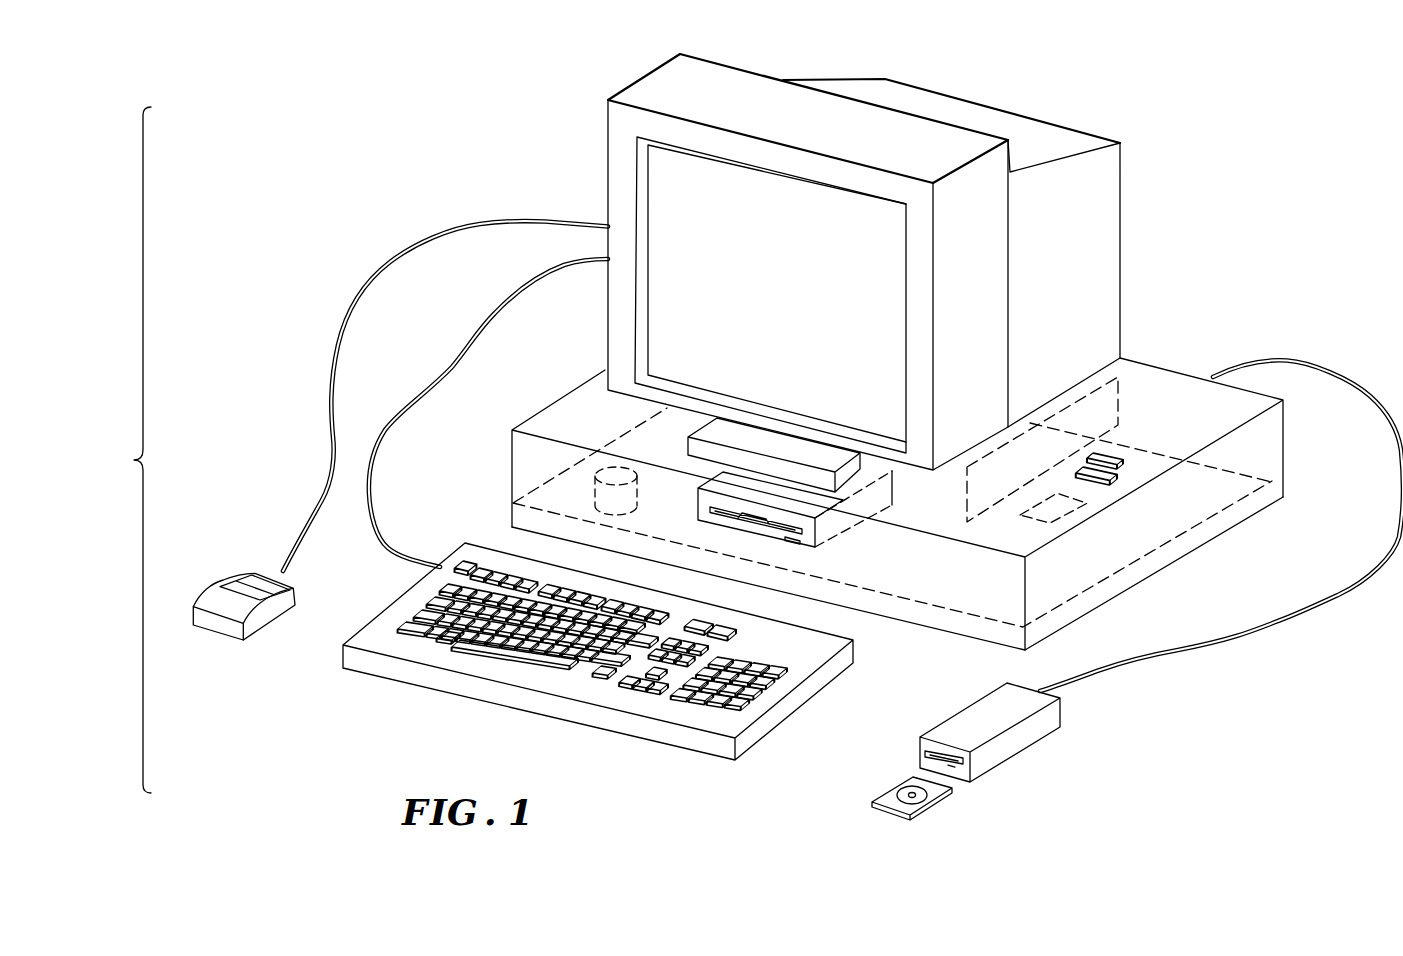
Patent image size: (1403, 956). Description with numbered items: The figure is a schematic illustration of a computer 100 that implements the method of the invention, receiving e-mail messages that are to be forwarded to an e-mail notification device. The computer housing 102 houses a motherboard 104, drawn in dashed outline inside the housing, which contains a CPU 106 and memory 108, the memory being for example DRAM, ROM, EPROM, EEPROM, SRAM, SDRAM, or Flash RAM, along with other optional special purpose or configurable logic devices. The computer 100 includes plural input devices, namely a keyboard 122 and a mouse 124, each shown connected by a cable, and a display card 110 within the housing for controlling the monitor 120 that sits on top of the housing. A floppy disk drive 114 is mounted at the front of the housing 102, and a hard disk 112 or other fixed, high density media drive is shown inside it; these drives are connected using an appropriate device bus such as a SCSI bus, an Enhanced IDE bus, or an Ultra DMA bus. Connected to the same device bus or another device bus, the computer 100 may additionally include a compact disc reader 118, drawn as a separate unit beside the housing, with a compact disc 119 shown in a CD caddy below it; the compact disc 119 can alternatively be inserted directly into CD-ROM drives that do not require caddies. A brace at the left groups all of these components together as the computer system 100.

The computer 100 is at (122, 450).
The computer housing 102 is at (1162, 373).
The motherboard 104 is at (1226, 506).
The CPU 106 is at (1047, 512).
The memory 108 is at (1120, 478).
The display card 110 is at (1097, 387).
The hard disk 112 is at (597, 495).
The floppy disk drive 114 is at (813, 541).
The compact disc reader 118 is at (972, 713).
The compact disc 119 is at (925, 792).
The monitor 120 is at (955, 110).
The keyboard 122 is at (793, 703).
The mouse 124 is at (225, 582).